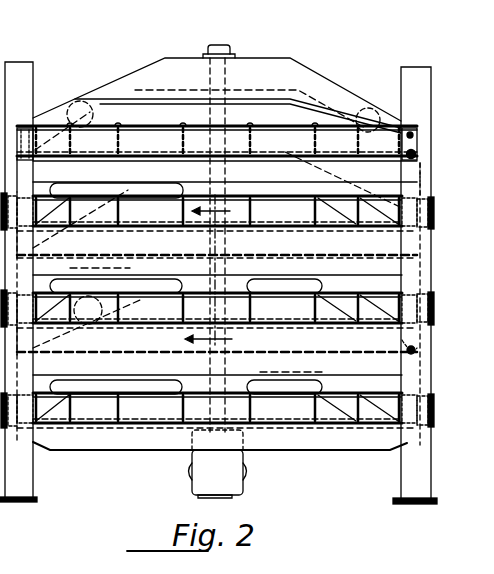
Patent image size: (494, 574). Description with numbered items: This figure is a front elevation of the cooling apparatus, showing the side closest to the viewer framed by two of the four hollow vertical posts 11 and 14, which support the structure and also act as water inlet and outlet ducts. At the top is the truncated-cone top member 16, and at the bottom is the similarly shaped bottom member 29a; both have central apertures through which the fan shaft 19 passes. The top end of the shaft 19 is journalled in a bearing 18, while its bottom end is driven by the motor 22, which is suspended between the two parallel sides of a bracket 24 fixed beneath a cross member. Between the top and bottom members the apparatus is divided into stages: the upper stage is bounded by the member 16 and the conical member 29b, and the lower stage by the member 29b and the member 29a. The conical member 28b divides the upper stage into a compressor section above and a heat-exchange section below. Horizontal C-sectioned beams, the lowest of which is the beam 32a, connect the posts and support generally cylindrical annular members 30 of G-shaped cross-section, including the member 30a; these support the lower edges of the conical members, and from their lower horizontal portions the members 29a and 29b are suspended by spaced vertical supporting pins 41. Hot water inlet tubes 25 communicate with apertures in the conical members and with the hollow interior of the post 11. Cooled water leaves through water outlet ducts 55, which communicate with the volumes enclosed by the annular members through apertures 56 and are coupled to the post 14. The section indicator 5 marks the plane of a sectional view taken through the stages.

The hollow vertical post 14 is at (27, 76).
The hollow vertical post 11 is at (410, 83).
The top member 16 is at (122, 83).
The bearing 18 is at (198, 56).
The fan shaft 19 is at (230, 80).
The hot water inlet tube 25 is at (62, 107).
The cylindrical annular member 30 is at (421, 180).
The cylindrical annular member 30a is at (422, 375).
The lower horizontal C-beam 32a is at (433, 420).
The vertical supporting pin 41 is at (313, 208).
The water outlet duct 55 is at (147, 193).
The aperture 56 is at (140, 390).
The conical member 28b is at (96, 246).
The conical member 29b is at (130, 268).
The bottom member 29a is at (325, 370).
The section line 5- 5 is at (215, 274).
The bracket 24 is at (190, 456).
The motor 22 is at (218, 475).